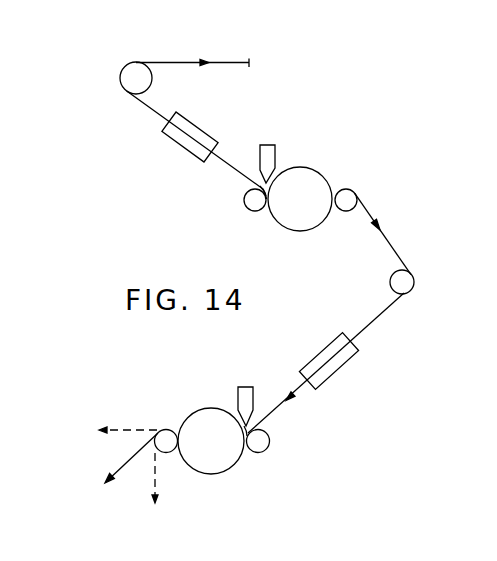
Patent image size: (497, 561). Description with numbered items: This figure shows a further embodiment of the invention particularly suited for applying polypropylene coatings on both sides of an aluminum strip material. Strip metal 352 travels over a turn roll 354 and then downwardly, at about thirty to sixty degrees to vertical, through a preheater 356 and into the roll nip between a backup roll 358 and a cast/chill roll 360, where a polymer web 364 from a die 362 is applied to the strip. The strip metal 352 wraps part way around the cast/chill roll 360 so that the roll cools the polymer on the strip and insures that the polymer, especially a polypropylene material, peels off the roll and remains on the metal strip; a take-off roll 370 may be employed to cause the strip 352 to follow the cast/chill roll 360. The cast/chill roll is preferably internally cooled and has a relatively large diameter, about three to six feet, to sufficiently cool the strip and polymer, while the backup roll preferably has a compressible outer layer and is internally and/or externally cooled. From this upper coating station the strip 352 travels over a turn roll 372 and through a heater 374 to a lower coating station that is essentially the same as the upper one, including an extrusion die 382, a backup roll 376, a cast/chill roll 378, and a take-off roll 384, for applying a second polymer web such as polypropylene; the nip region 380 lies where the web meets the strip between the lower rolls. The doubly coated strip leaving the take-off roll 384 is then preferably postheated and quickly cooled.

The strip metal 352 is at (233, 63).
The turn roll 354 is at (127, 67).
The preheater 356 is at (181, 151).
The backup roll 358 is at (247, 208).
The cast/chill roll 360 is at (330, 181).
The die 362 is at (268, 144).
The polymer web 364 is at (247, 180).
The take-off roll 370 is at (349, 212).
The turn roll 372 is at (390, 282).
The heater 374 is at (344, 363).
The backup roll 376 is at (266, 449).
The cast/chill roll 378 is at (221, 409).
The nip 380 is at (253, 419).
The extrusion die 382 is at (241, 387).
The take-off roll 384 is at (163, 430).